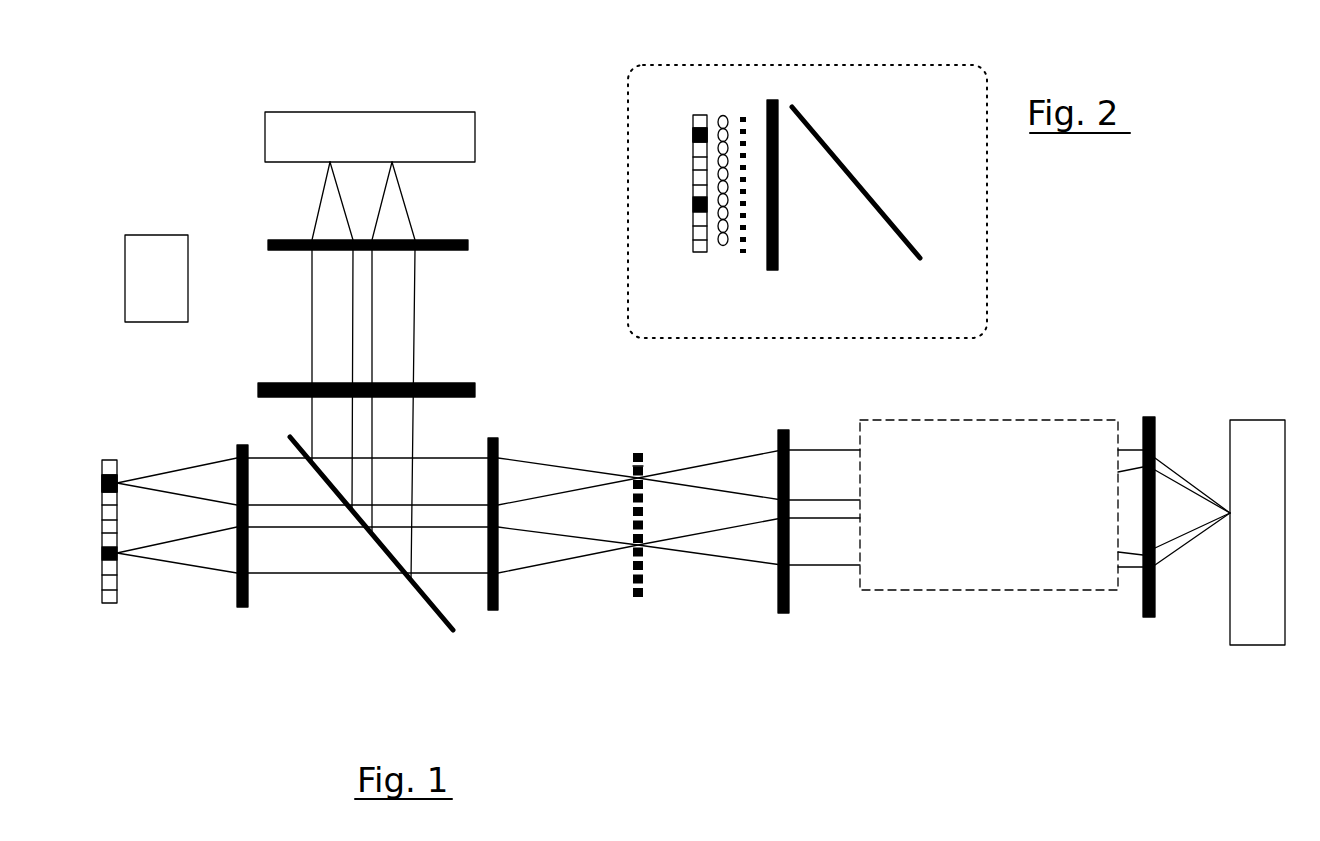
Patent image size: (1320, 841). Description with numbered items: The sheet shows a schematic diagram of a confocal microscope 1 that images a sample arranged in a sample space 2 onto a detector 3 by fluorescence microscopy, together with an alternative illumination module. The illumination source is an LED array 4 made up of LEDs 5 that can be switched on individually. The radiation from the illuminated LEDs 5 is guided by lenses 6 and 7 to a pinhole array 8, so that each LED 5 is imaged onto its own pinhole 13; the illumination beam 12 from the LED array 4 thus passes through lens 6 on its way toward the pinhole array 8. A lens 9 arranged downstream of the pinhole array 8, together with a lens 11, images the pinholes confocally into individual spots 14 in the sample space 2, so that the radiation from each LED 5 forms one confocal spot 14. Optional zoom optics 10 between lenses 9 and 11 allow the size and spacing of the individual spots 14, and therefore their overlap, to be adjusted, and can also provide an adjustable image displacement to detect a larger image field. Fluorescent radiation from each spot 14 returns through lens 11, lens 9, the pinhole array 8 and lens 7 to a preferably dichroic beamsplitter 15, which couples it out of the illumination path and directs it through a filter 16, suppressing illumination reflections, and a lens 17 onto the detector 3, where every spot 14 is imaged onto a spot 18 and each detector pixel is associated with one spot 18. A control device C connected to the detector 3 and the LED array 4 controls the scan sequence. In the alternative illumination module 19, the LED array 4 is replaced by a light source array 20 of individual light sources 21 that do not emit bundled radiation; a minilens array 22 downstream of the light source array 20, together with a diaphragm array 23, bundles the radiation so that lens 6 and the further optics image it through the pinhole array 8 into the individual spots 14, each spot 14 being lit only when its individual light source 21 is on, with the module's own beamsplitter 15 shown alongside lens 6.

In FIG. 1, the microscope 1 is at (890, 722).
In FIG. 1, the sample space 2 is at (1252, 638).
In FIG. 1, the detector 3 is at (460, 118).
In FIG. 1, the LED array 4 is at (103, 580).
In FIG. 1, the LED 5 is at (103, 483).
In FIG. 1, the lens 6 is at (242, 607).
In FIG. 2, the lens 6 is at (777, 257).
In FIG. 1, the lens 7 is at (495, 598).
In FIG. 1, the pinhole array 8 is at (645, 570).
In FIG. 1, the lens 9 is at (779, 600).
In FIG. 1, the zoom optics 10 is at (1015, 582).
In FIG. 1, the lens 11 is at (1143, 608).
In FIG. 1, the light beam 12 is at (163, 455).
In FIG. 1, the pinhole 13 is at (630, 472).
In FIG. 1, the individual spot 14 is at (1207, 490).
In FIG. 1, the beamsplitter 15 is at (437, 608).
In FIG. 2, the beamsplitter 15 is at (920, 258).
In FIG. 1, the filter 16 is at (468, 383).
In FIG. 1, the lens 17 is at (468, 250).
In FIG. 1, the spot 18 is at (330, 162).
In FIG. 2, the illumination module 19 is at (987, 248).
In FIG. 2, the light source array 20 is at (692, 245).
In FIG. 2, the individual light source 21 is at (692, 132).
In FIG. 2, the minilens array 22 is at (723, 246).
In FIG. 2, the diaphragm array 23 is at (743, 118).
In FIG. 1, the control device C is at (125, 268).